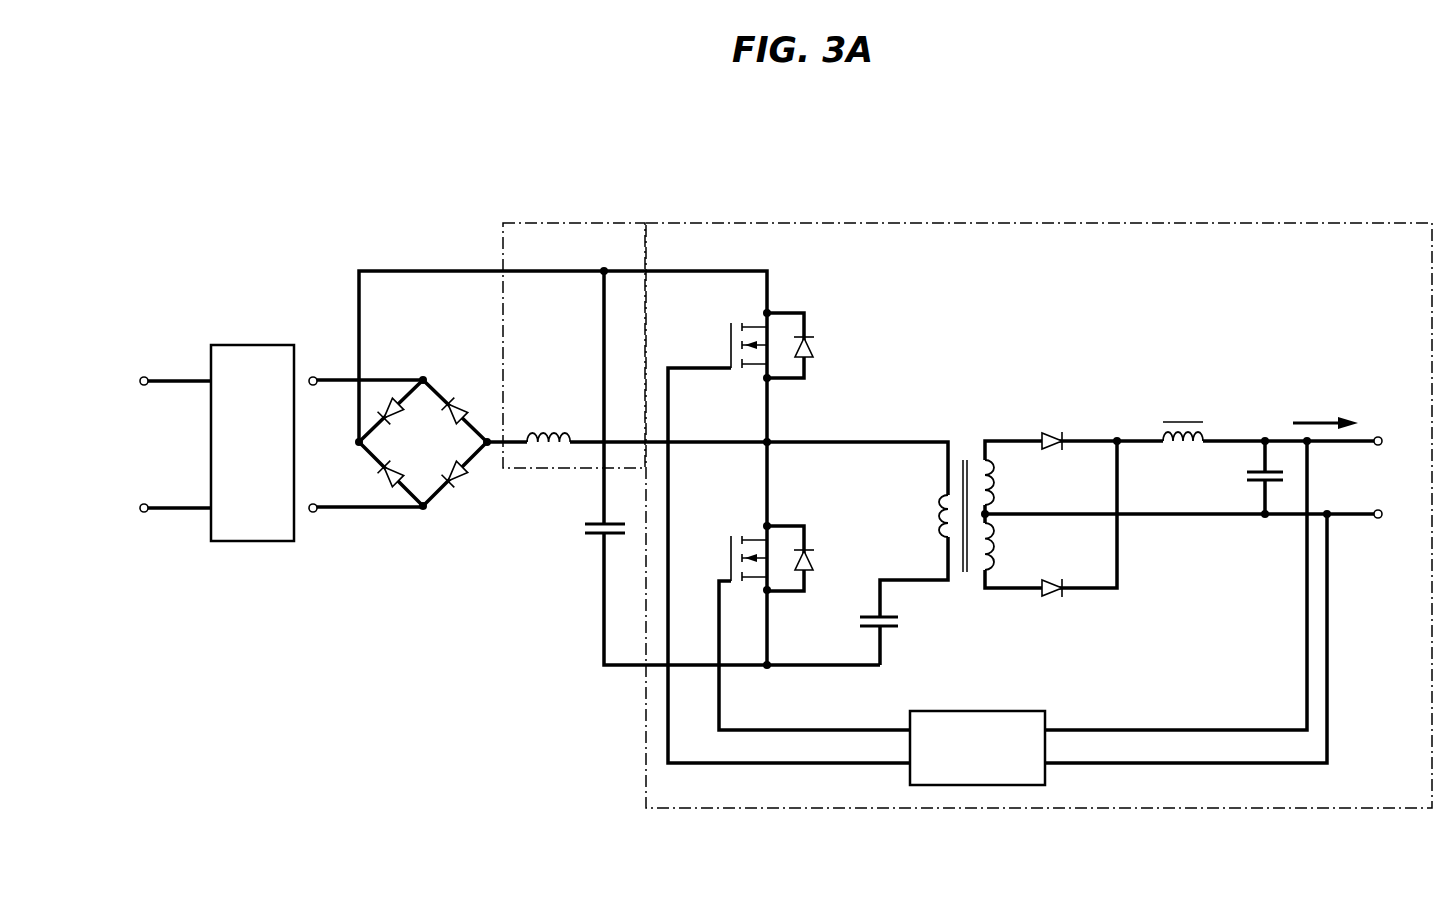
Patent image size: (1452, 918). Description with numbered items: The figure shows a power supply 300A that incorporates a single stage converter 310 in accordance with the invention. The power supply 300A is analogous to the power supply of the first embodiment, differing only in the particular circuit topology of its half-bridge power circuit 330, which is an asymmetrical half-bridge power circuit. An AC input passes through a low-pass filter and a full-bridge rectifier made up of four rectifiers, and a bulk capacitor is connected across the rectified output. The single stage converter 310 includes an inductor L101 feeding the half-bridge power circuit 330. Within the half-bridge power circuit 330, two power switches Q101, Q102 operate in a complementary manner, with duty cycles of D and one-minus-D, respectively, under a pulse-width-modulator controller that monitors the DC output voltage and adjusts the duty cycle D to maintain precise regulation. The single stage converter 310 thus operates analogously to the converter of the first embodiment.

The power supply 300A is at (995, 192).
The single stage converter 310 is at (690, 206).
The half-bridge power circuit 330 is at (1409, 261).
The power switch Q101 is at (789, 517).
The power switch Q102 is at (798, 586).
The inductor L101 is at (570, 423).